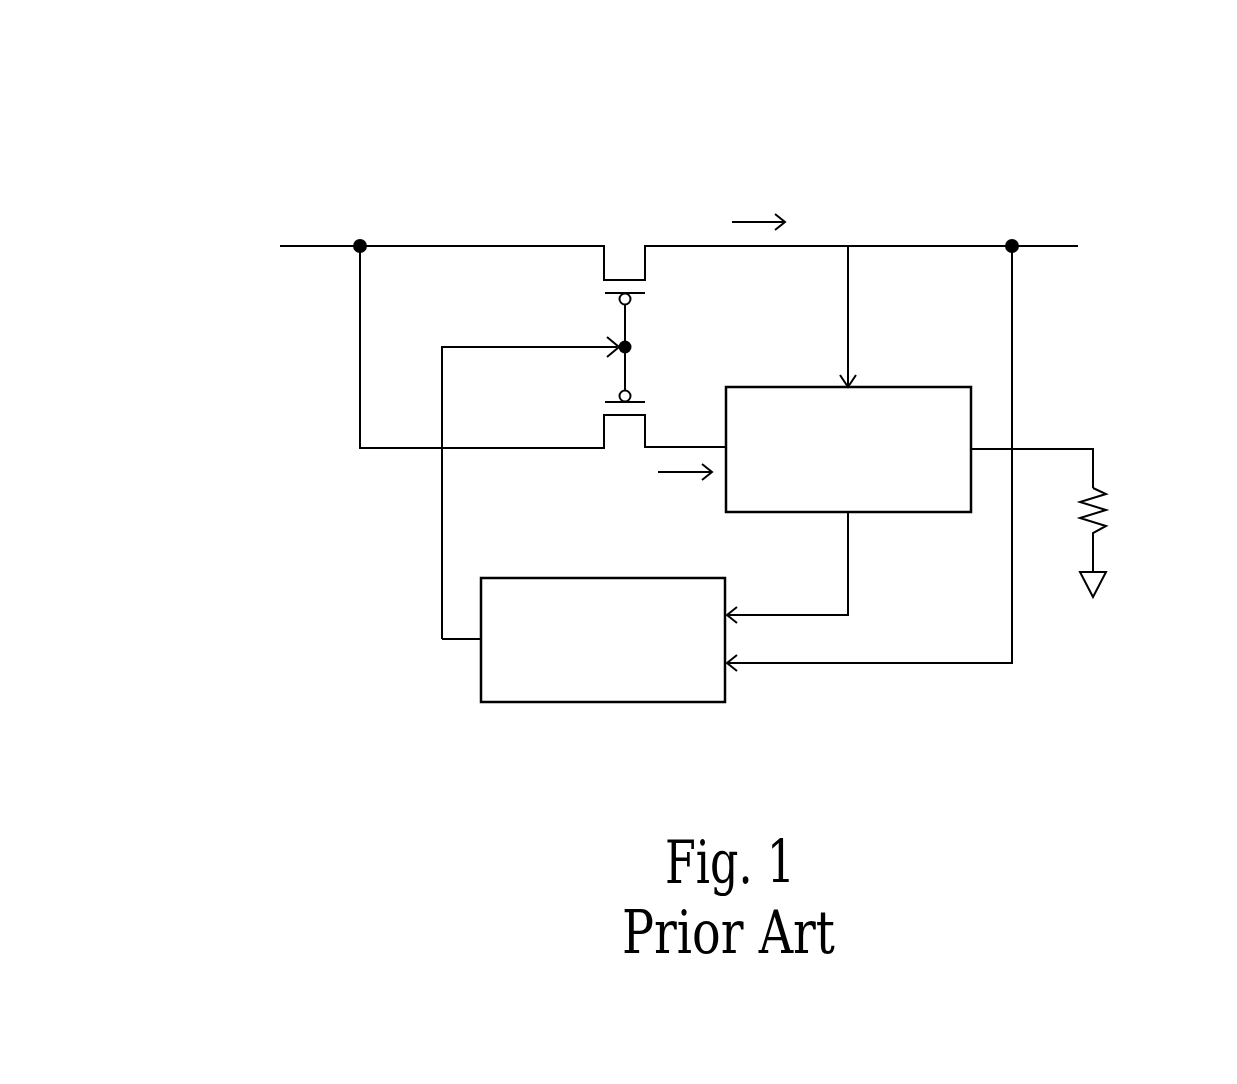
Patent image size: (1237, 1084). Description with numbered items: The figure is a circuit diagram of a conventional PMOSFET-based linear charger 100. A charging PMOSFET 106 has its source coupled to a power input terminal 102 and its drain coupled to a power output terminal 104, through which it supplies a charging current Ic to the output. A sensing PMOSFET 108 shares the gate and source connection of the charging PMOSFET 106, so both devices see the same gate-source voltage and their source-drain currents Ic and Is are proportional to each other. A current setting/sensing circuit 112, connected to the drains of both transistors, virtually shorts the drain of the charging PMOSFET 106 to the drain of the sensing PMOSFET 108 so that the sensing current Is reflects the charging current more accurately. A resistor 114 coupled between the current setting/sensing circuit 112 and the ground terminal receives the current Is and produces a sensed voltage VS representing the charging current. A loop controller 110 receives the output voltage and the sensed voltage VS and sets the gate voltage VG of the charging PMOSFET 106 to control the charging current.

The linear charger 100 is at (290, 130).
The power input terminal 102 is at (361, 243).
The power output terminal 104 is at (1015, 242).
The charging PMOSFET 106 is at (661, 291).
The sensing PMOSFET 108 is at (590, 410).
The loop controller 110 is at (601, 577).
The current setting/sensing circuit 112 is at (905, 386).
The resistor 114 is at (1121, 502).